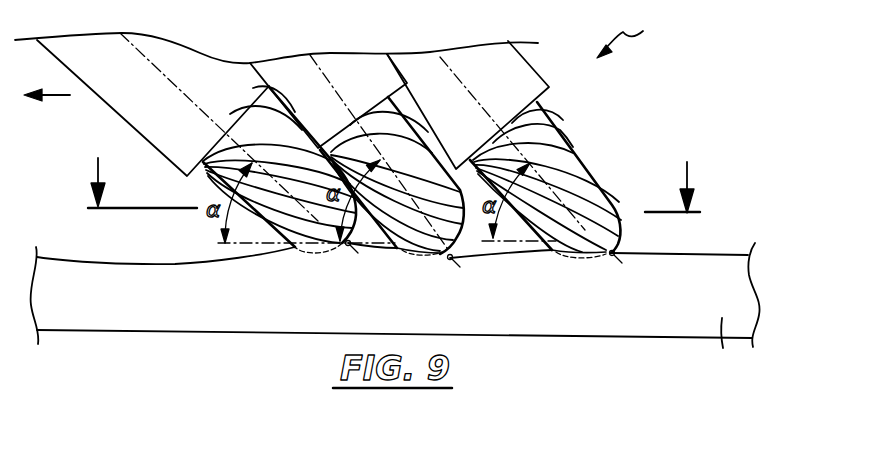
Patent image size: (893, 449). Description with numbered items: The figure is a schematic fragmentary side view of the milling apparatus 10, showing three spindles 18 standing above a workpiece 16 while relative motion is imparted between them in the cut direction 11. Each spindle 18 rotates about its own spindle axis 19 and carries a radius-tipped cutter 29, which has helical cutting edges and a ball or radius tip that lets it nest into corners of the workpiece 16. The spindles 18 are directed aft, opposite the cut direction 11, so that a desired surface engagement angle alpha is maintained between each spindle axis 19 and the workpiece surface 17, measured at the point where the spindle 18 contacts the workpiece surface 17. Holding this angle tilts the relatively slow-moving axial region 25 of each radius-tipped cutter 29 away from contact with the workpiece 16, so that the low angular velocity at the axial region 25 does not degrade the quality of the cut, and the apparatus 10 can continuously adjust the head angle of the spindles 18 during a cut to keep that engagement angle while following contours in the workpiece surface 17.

The milling apparatus 10 is at (395, 110).
The cut direction 11 is at (52, 97).
The workpiece 16 is at (395, 310).
The workpiece surface 17 is at (735, 253).
The spindle 18 is at (178, 60).
The spindle axis 19 is at (200, 103).
The axial region 25 is at (333, 245).
The radius-tipped cutter 29 is at (367, 150).